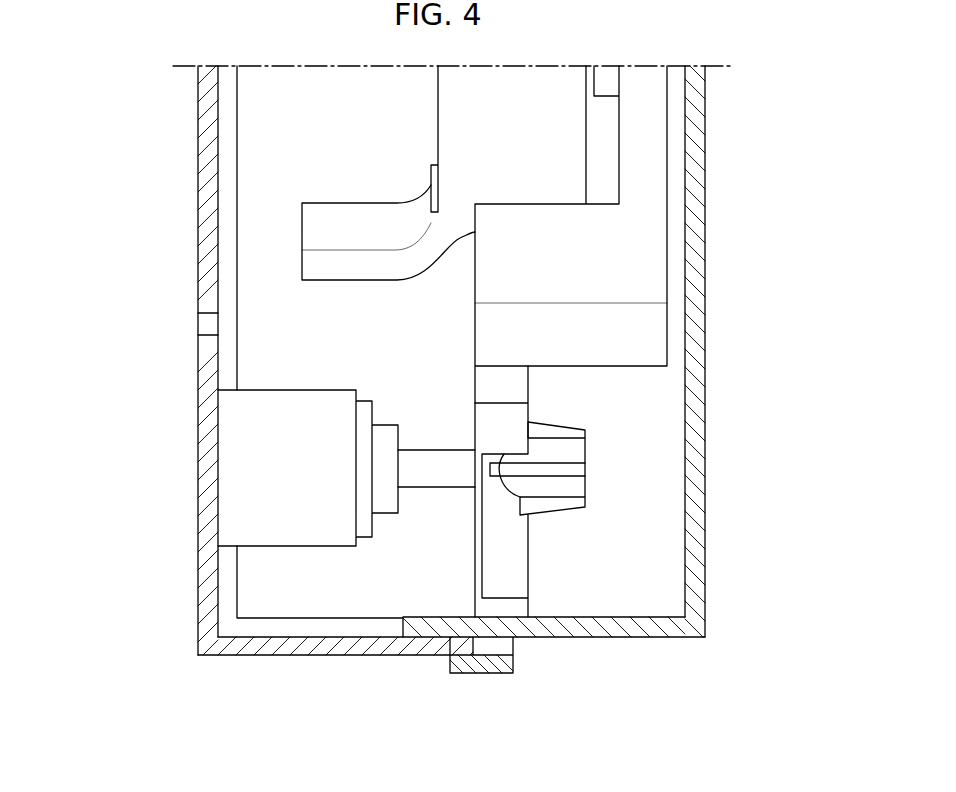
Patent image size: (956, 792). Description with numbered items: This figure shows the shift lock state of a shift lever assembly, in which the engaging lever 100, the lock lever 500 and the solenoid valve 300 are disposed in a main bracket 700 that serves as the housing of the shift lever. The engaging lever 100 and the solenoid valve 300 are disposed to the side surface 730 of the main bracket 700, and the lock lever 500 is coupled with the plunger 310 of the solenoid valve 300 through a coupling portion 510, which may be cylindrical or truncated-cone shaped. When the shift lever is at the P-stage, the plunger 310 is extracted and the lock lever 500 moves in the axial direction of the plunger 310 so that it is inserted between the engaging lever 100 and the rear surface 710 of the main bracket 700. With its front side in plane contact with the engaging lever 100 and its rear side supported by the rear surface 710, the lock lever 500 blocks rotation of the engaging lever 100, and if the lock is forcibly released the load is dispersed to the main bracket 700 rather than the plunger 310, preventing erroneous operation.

The engaging lever 100 is at (647, 253).
The solenoid valve 300 is at (238, 488).
The plunger 310 is at (432, 473).
The lock lever 500 is at (563, 563).
The coupling portion 510 is at (589, 458).
The main bracket 700 is at (186, 246).
The rear surface 710 is at (295, 655).
The side surface 730 is at (207, 385).